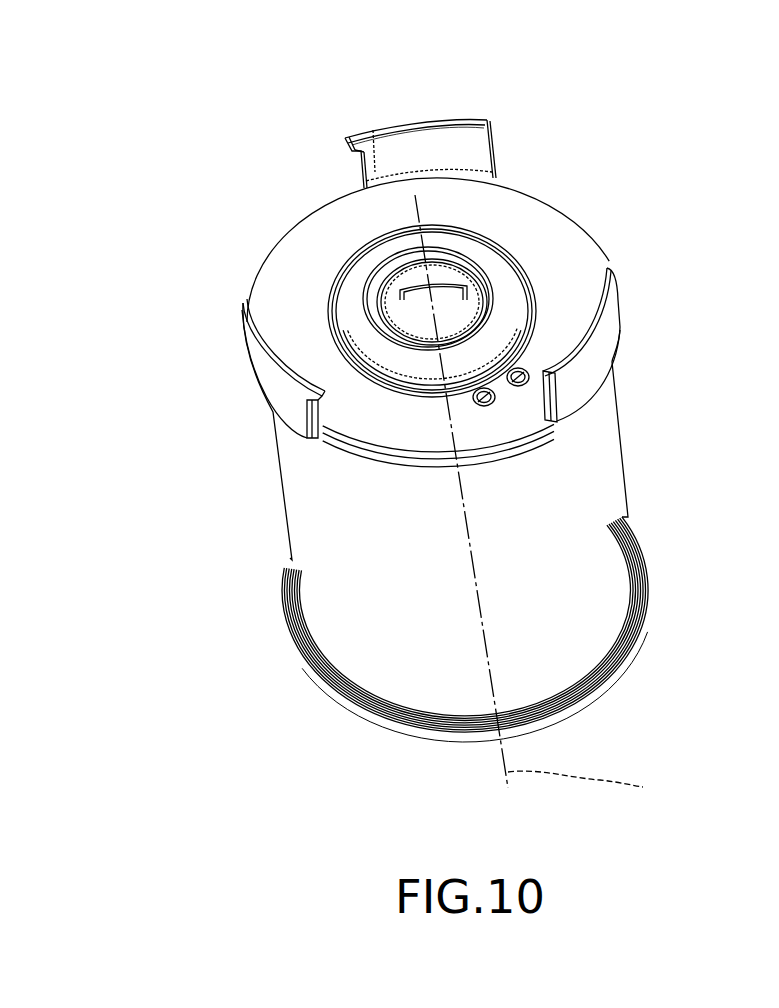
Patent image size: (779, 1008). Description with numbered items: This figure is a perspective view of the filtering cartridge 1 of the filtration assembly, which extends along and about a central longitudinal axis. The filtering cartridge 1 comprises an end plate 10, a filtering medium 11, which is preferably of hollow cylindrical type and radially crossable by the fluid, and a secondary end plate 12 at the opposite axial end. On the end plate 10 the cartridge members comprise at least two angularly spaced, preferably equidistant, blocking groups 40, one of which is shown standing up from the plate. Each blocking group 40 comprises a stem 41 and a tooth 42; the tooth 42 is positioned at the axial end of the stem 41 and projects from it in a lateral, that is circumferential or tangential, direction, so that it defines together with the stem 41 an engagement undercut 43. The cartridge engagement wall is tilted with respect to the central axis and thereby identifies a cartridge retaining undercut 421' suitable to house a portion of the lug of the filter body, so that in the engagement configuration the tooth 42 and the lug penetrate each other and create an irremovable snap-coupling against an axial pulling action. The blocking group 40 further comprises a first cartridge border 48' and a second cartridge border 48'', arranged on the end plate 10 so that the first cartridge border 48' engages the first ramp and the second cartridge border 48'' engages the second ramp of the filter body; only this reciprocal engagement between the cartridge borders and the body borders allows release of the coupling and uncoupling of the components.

The filtering cartridge 1 is at (249, 490).
The end plate 10 is at (563, 240).
The filtering medium 11 is at (582, 480).
The secondary end plate 12 is at (373, 722).
The blocking group 40 is at (502, 89).
The stem 41 is at (373, 172).
The tooth 42 is at (350, 138).
The cartridge retaining undercut 421' is at (256, 110).
The engagement undercut 43 is at (350, 163).
The first cartridge border 48' is at (596, 269).
The second cartridge border 48'' is at (229, 305).